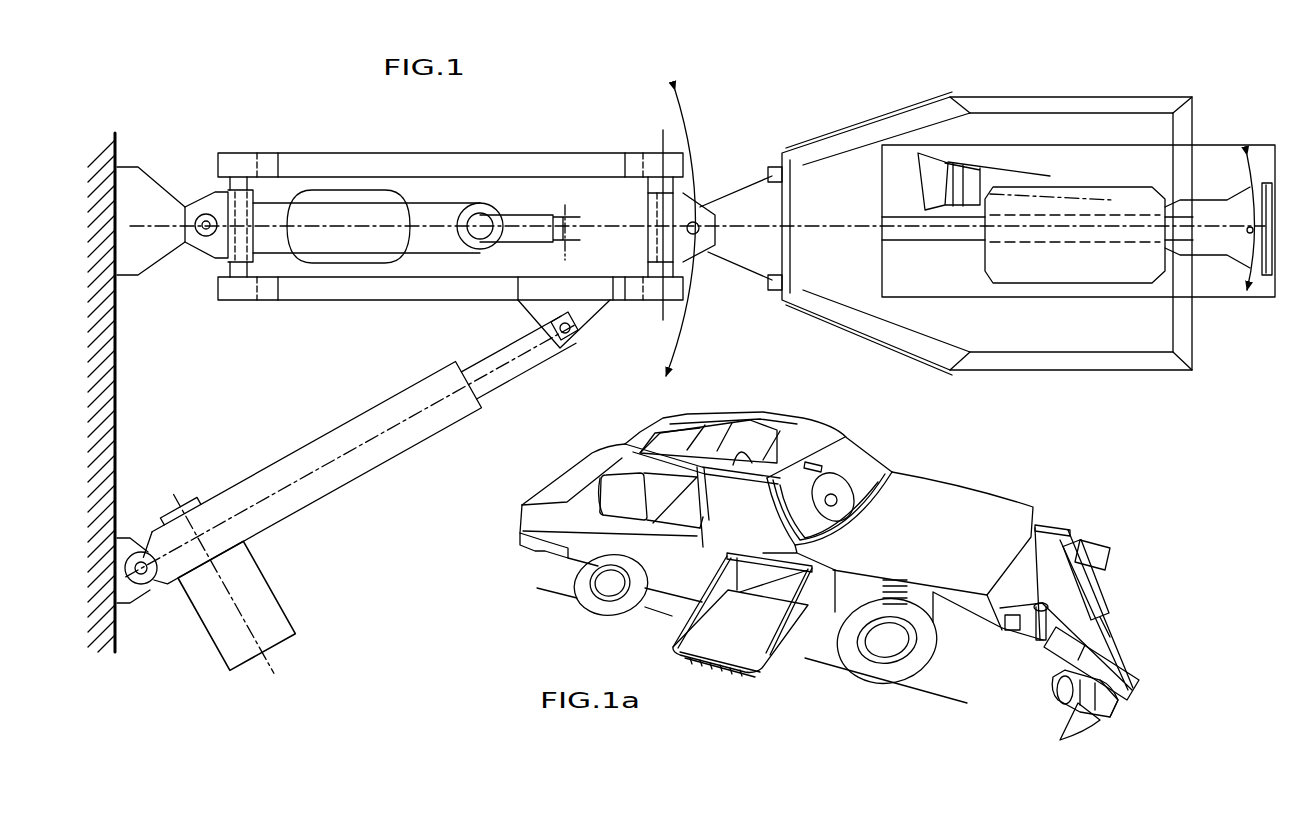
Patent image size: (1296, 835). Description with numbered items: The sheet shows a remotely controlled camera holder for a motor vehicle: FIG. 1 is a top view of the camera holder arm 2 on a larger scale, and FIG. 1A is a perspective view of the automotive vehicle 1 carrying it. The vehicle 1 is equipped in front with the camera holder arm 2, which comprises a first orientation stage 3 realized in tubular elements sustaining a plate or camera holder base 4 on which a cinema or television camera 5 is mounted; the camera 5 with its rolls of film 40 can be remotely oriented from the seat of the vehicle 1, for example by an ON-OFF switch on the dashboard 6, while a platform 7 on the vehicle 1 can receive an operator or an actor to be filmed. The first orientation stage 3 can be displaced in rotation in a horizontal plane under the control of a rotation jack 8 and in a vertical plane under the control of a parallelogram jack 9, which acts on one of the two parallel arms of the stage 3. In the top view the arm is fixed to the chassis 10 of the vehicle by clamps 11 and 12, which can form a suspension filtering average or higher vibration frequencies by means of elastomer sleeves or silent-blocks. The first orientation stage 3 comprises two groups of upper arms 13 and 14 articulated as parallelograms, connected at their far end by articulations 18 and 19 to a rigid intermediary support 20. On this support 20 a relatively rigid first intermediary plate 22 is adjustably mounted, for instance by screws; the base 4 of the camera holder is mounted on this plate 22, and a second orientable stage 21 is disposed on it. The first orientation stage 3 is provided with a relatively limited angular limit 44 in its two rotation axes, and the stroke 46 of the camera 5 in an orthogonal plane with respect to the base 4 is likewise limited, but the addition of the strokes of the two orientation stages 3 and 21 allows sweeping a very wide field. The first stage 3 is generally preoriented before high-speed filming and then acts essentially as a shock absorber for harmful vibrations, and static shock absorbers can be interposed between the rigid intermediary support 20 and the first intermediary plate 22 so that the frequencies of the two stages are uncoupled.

In FIG. 1A, the automotive vehicle 1 is at (943, 507).
In FIG. 1A, the camera holder arm 2 is at (1110, 622).
In FIG. 1, the first orientation stage 3 is at (450, 215).
In FIG. 1A, the first orientation stage 3 is at (1058, 653).
In FIG. 1, the camera holder base 4 is at (990, 155).
In FIG. 1A, the camera holder base 4 is at (1095, 718).
In FIG. 1, the camera 5 is at (1127, 270).
In FIG. 1A, the camera 5 is at (1110, 698).
In FIG. 1A, the dashboard 6 is at (880, 488).
In FIG. 1A, the platform 7 is at (767, 650).
In FIG. 1, the rotation jack 8 is at (318, 483).
In FIG. 1A, the rotation jack 8 is at (1082, 583).
In FIG. 1, the parallelogram jack 9 is at (425, 240).
In FIG. 1A, the parallelogram jack 9 is at (1057, 650).
In FIG. 1, the chassis 10 is at (113, 625).
In FIG. 1, the clamp 11 is at (185, 183).
In FIG. 1, the clamp 12 is at (155, 195).
In FIG. 1, the upper arms 13 is at (496, 160).
In FIG. 1, the upper arms 14 is at (437, 290).
In FIG. 1, the articulation 18 is at (587, 333).
In FIG. 1, the articulation 19 is at (564, 324).
In FIG. 1, the rigid intermediary support 20 is at (705, 245).
In FIG. 1, the second orientable stage 21 is at (1028, 211).
In FIG. 1, the first intermediary plate 22 is at (848, 142).
In FIG. 1A, the rolls of film 40 is at (1103, 697).
In FIG. 1, the angular limit 44 is at (685, 330).
In FIG. 1, the stroke 46 is at (1247, 275).